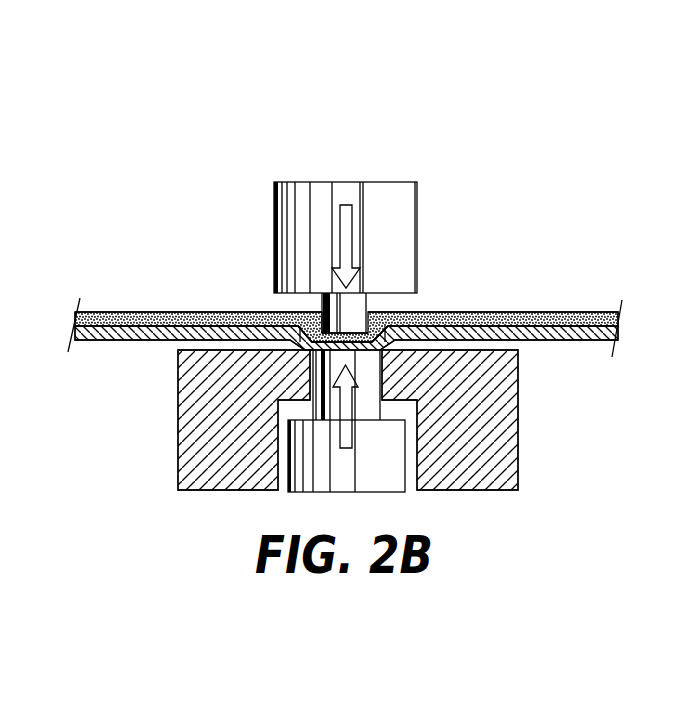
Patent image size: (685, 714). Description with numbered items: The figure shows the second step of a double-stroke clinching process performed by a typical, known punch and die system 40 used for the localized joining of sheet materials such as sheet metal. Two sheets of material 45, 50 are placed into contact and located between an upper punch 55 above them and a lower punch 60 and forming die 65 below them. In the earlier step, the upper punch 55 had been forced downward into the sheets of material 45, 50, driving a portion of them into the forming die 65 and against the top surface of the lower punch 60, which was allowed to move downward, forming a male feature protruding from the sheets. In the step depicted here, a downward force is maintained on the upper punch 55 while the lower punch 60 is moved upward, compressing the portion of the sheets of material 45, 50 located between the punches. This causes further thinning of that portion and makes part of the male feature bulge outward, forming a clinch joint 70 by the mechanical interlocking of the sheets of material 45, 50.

The punch and die system 40 is at (573, 146).
The sheet of material 45 is at (137, 312).
The sheet of material 50 is at (553, 338).
The upper punch 55 is at (275, 243).
The lower punch 60 is at (293, 488).
The forming die 65 is at (523, 507).
The clinch joint 70 is at (427, 313).